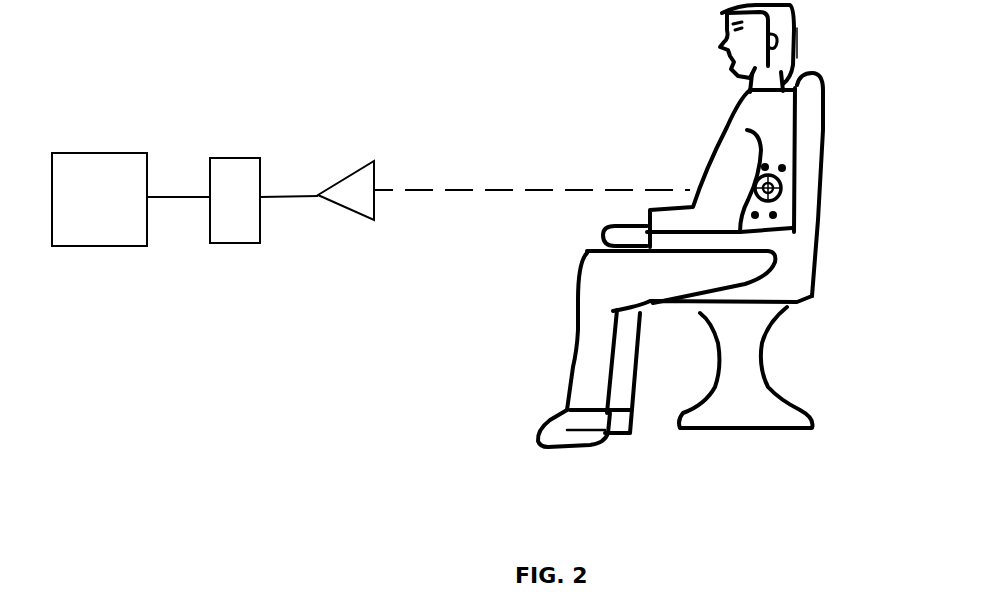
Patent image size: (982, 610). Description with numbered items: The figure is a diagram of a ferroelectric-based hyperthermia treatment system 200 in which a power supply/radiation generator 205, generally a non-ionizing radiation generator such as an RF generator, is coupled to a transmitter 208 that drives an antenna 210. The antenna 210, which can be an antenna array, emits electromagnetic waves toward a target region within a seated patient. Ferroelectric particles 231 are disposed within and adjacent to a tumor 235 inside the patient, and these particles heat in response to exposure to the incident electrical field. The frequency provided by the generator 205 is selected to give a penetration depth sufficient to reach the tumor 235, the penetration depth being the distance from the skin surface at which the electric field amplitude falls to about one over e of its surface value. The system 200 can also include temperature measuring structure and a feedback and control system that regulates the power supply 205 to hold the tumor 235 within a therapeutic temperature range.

The hyperthermia treatment system 200 is at (264, 463).
The power supply/radiation generator 205 is at (97, 246).
The transmitter 208 is at (237, 243).
The antenna 210 is at (358, 215).
The tumor 235 is at (788, 180).
The ferroelectric particles 231 is at (777, 215).